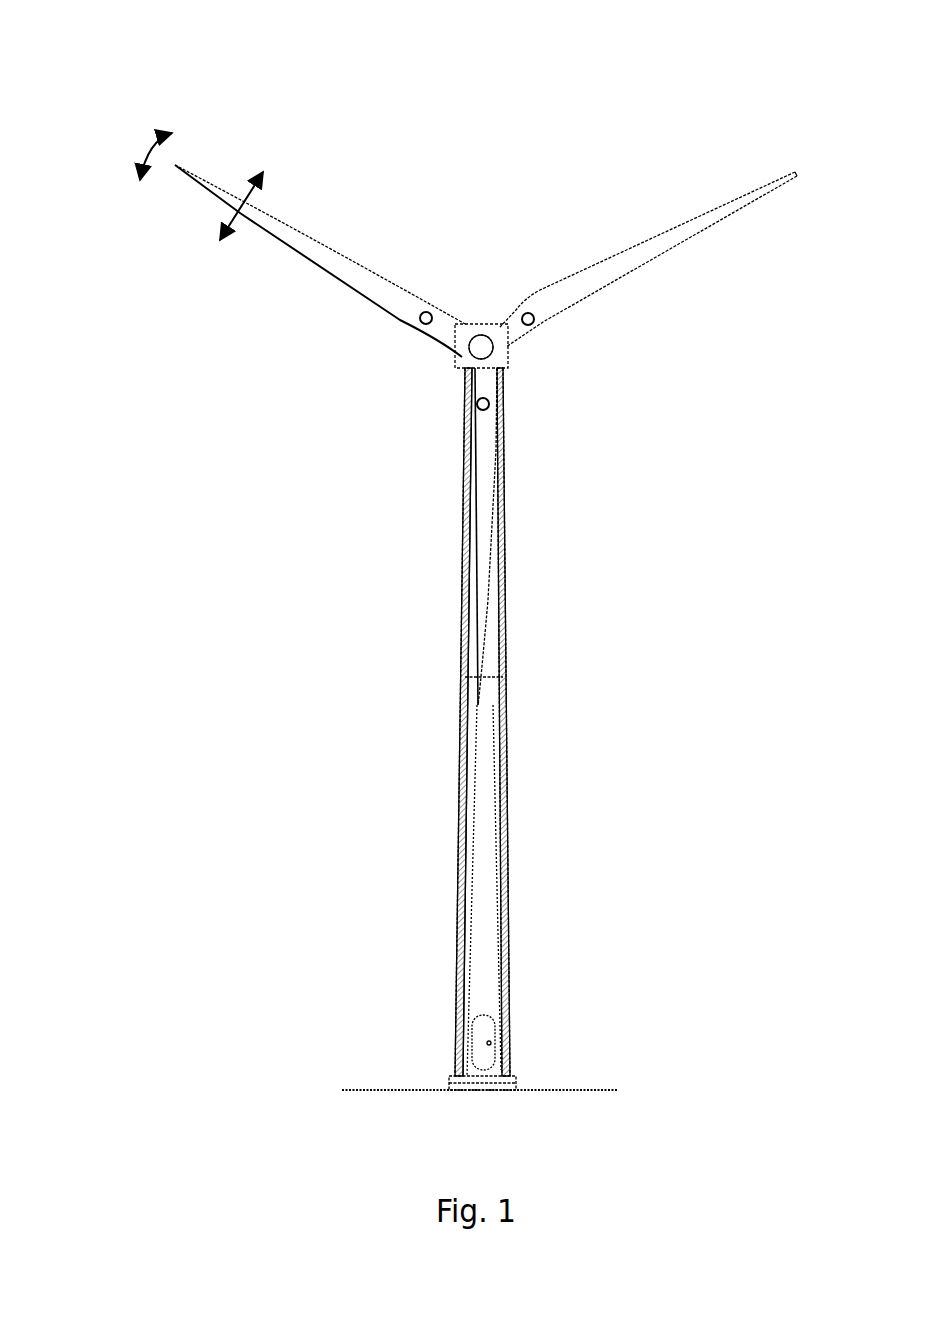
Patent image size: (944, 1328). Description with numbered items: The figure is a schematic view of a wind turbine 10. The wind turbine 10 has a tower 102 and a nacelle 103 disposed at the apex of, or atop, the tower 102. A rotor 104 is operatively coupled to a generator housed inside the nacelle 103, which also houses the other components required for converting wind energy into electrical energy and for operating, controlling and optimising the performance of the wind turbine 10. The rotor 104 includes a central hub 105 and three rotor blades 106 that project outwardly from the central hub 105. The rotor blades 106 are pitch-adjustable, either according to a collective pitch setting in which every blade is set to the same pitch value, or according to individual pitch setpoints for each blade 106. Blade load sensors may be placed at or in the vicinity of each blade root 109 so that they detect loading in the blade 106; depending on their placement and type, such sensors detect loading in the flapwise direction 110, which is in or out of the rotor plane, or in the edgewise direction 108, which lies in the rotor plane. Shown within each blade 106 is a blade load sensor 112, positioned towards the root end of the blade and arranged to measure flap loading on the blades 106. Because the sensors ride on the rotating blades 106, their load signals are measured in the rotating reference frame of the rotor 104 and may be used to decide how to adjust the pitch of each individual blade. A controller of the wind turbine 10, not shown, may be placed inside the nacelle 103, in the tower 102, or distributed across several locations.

The wind turbine 10 is at (562, 106).
The tower 102 is at (490, 762).
The nacelle 103 is at (457, 364).
The rotor 104 is at (517, 408).
The central hub 105 is at (490, 350).
The rotor blade 106 is at (668, 240).
The edgewise direction 108 is at (227, 223).
The blade root 109 is at (477, 338).
The flapwise direction 110 is at (155, 142).
The blade load sensor 112 is at (430, 311).